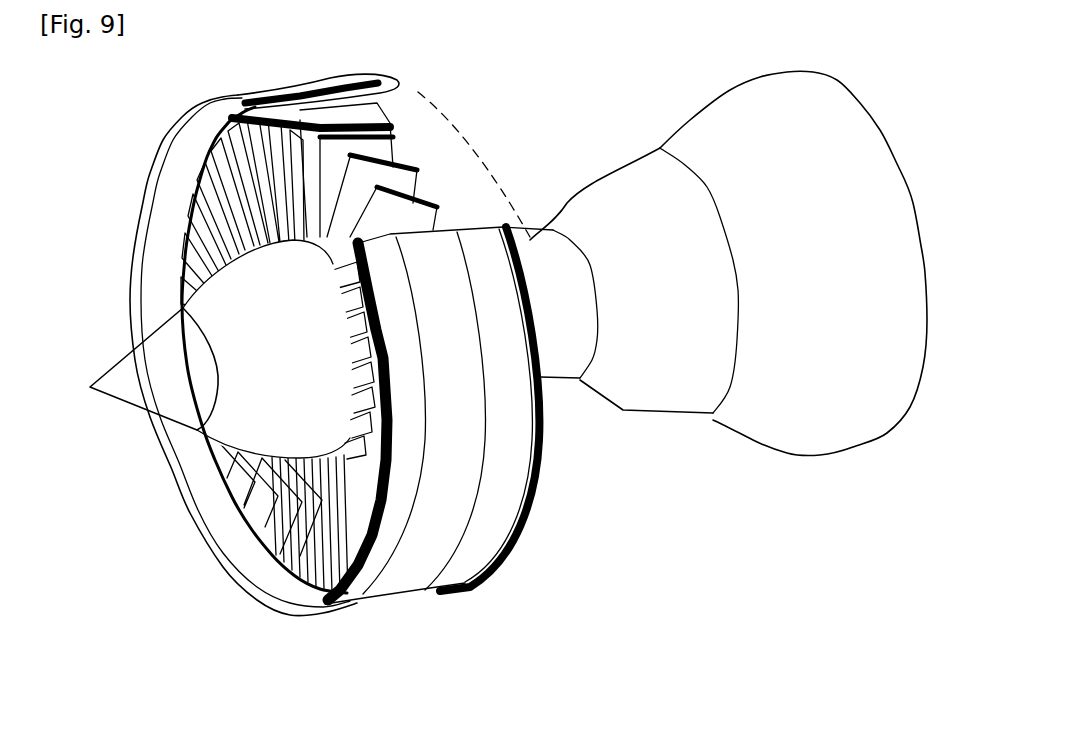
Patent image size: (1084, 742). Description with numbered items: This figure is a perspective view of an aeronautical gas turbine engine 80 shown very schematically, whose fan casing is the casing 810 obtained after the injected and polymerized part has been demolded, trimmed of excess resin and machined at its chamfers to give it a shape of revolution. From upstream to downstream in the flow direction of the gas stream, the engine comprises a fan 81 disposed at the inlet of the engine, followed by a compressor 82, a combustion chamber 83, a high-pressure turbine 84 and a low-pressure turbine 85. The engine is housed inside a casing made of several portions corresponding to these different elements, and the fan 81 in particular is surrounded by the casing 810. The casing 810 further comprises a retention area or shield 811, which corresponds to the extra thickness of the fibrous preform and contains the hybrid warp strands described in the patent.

The aeronautical gas turbine engine 80 is at (540, 88).
The fan 81 is at (243, 513).
The compressor 82 is at (363, 606).
The combustion chamber 83 is at (534, 248).
The high-pressure turbine 84 is at (607, 190).
The low-pressure turbine 85 is at (719, 108).
The casing 810 is at (493, 512).
The retention area or shield 811 is at (305, 82).